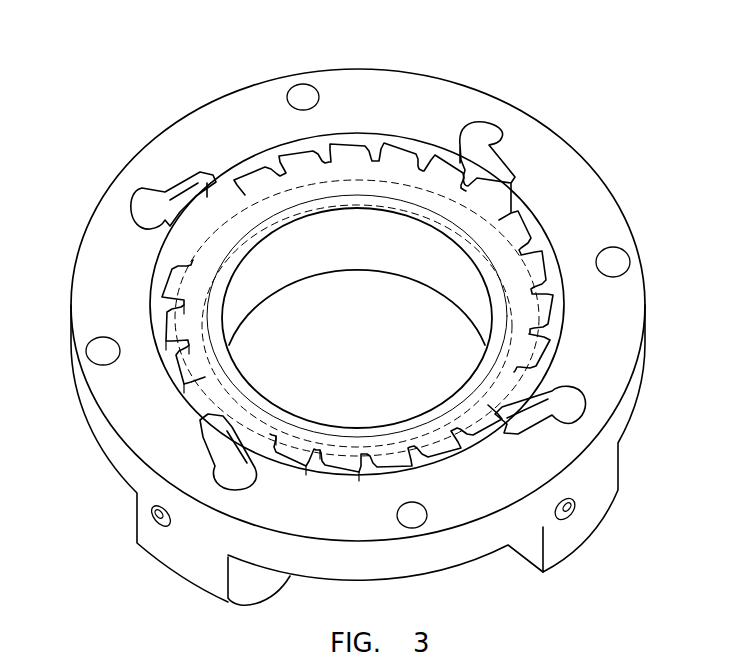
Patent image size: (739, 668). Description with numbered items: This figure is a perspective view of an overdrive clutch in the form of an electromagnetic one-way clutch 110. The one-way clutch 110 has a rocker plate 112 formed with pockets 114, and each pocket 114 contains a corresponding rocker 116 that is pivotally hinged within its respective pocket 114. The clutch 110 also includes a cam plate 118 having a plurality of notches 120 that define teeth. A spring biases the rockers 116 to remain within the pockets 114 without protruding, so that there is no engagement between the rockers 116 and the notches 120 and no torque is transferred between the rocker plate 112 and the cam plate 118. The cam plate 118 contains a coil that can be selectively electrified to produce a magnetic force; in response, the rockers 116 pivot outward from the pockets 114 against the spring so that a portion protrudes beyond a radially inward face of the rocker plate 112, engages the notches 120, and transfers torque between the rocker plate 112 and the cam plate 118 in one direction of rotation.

The electromagnetic one-way clutch 110 is at (112, 123).
The rocker plate 112 is at (128, 426).
The pocket 114 is at (583, 390).
The rocker 116 is at (233, 472).
The cam plate 118 is at (185, 293).
The notch 120 is at (423, 164).